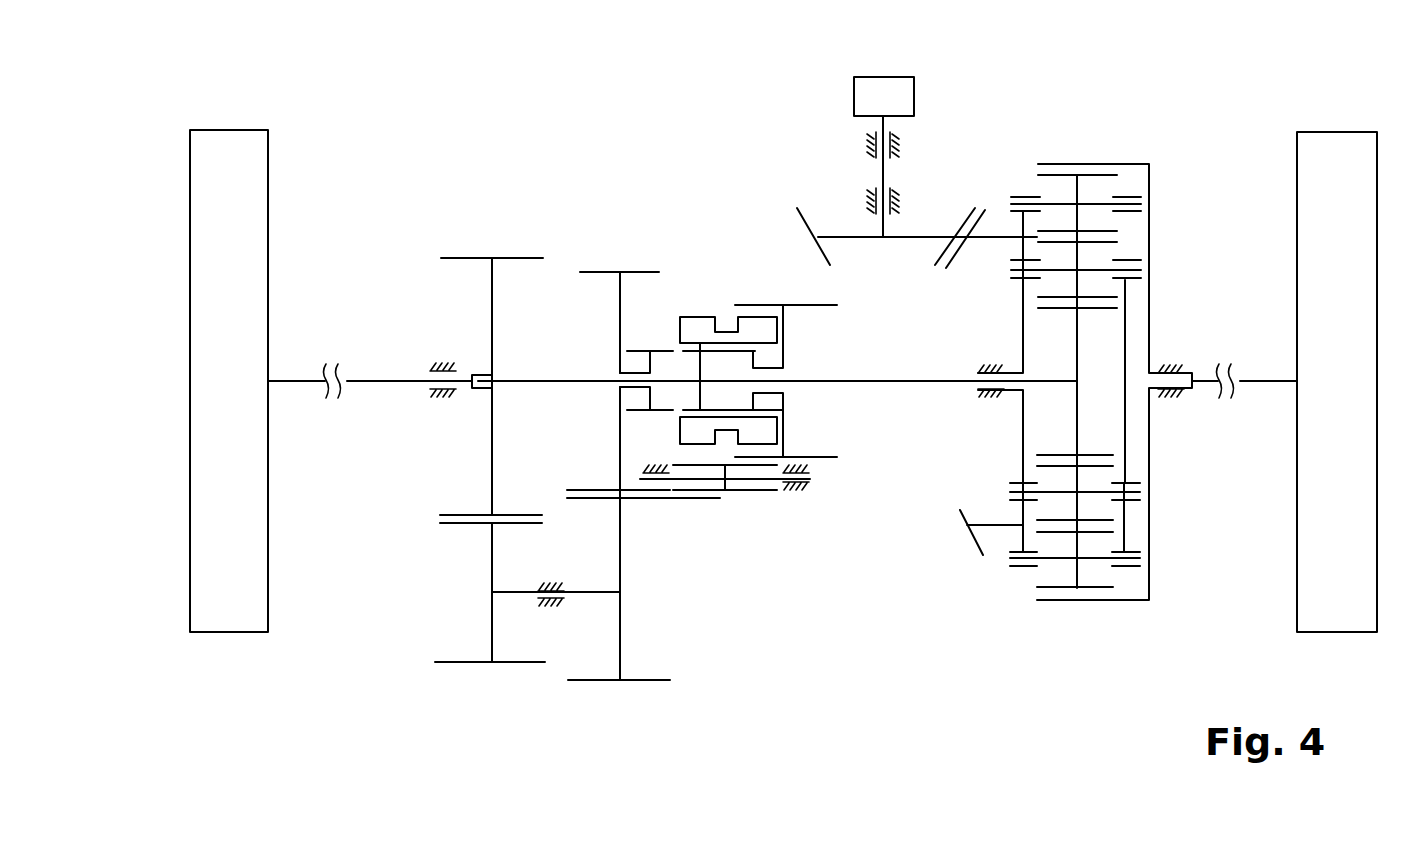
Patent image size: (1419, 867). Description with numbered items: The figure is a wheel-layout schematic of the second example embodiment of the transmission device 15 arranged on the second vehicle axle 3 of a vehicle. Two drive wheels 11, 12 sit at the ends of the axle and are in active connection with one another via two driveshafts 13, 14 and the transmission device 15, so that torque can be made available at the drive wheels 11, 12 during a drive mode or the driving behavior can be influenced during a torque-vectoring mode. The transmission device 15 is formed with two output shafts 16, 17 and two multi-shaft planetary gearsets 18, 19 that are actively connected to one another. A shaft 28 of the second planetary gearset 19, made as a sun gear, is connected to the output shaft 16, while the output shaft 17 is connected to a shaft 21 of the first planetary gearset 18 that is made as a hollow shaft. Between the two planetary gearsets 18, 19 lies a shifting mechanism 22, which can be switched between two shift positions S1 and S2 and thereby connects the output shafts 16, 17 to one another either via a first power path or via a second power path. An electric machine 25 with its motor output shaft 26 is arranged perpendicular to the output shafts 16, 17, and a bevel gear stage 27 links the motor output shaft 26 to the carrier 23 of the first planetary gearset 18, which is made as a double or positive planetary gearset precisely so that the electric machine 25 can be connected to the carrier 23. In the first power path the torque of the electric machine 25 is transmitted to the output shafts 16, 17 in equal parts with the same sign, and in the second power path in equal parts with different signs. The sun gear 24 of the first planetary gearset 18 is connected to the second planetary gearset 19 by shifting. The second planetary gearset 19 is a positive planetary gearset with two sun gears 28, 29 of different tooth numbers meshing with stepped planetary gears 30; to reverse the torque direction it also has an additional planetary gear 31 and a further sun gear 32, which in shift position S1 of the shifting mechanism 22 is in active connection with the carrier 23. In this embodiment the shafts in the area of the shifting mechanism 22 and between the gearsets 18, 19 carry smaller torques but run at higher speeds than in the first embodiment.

The second vehicle axle 3 is at (325, 636).
The drive wheel 11 is at (230, 152).
The drive wheel 12 is at (1338, 152).
The driveshaft 13 is at (322, 379).
The driveshaft 14 is at (1247, 380).
The transmission device 15 is at (343, 188).
The output shaft 16 is at (378, 379).
The output shaft 17 is at (1183, 411).
The first planetary gearset 18 is at (1016, 161).
The second planetary gearset 19 is at (458, 188).
The shaft 21 is at (1149, 560).
The shifting mechanism 22 is at (726, 291).
The carrier 23 is at (1023, 322).
The sun gear 24 is at (1077, 432).
The electric machine 25 is at (846, 97).
The motor output shaft 26 is at (883, 170).
The bevel gear stage 27 is at (968, 201).
The sun gear 28 is at (490, 451).
The sun gear 29 is at (620, 433).
The stepped planetary gears 30 is at (481, 678).
The additional planetary gear 31 is at (758, 492).
The further sun gear 32 is at (837, 458).
The first shift position S1 is at (775, 289).
The second shift position S2 is at (679, 303).